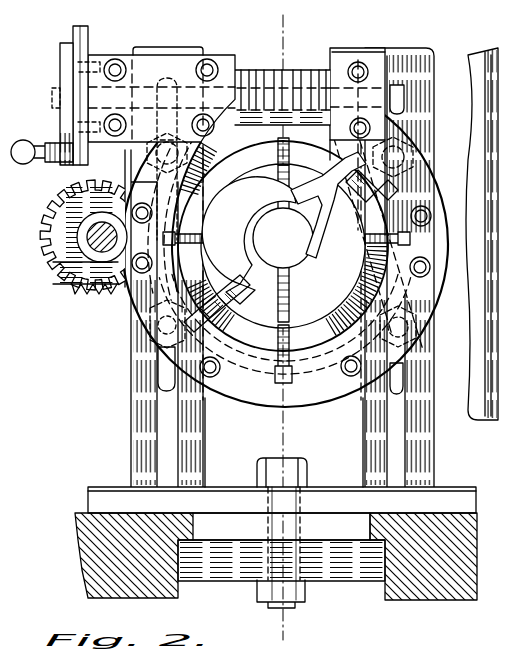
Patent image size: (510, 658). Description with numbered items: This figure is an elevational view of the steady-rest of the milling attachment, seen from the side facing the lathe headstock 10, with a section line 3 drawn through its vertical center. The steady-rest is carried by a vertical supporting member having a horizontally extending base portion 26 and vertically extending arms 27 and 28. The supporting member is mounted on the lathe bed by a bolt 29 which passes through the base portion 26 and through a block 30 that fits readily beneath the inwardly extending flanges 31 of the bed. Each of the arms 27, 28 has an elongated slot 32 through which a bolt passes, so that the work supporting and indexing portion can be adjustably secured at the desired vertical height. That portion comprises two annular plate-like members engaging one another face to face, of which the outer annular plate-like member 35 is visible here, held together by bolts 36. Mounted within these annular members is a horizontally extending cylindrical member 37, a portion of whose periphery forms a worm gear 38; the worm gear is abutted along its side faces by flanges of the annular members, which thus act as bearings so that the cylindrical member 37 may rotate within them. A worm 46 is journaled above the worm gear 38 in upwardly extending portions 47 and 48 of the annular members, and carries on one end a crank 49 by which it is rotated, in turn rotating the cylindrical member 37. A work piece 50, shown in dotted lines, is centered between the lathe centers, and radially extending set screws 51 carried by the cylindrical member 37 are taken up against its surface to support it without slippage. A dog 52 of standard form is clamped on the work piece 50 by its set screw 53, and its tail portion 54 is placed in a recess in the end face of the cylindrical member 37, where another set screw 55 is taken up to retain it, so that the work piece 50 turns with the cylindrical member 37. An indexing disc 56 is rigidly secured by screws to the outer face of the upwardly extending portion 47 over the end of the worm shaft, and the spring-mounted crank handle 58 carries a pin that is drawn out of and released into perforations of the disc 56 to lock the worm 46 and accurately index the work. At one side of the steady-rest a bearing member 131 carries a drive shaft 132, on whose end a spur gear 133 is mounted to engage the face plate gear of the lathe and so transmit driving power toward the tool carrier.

The section line 3- 3 is at (292, 24).
The headstock 10 is at (486, 62).
The base portion 26 is at (88, 498).
The vertically extending arm 27 is at (204, 440).
The vertically extending arm 28 is at (365, 455).
The bolt 29 is at (297, 467).
The block 30 is at (322, 575).
The inwardly extending flanges 31 is at (193, 527).
The elongated slots 32 is at (158, 372).
The annular plate-like member 35 is at (300, 402).
The bolts 36 is at (425, 278).
The cylindrical member 37 is at (330, 306).
The worm gear 38 is at (234, 368).
The worm 46 is at (285, 72).
The upwardly extending portion 47 is at (152, 60).
The upwardly extending portion 48 is at (370, 60).
The crank 49 is at (60, 63).
The work piece 50 is at (298, 214).
The set screws 51 is at (311, 240).
The dog 52 is at (250, 206).
The set screw 53 is at (232, 310).
The tail portion 54 is at (335, 170).
The set screw 55 is at (370, 200).
The indexing disc 56 is at (81, 86).
The crank handle 58 is at (42, 159).
The bearing member 131 is at (72, 254).
The drive shaft 132 is at (88, 224).
The spur gear 133 is at (80, 294).